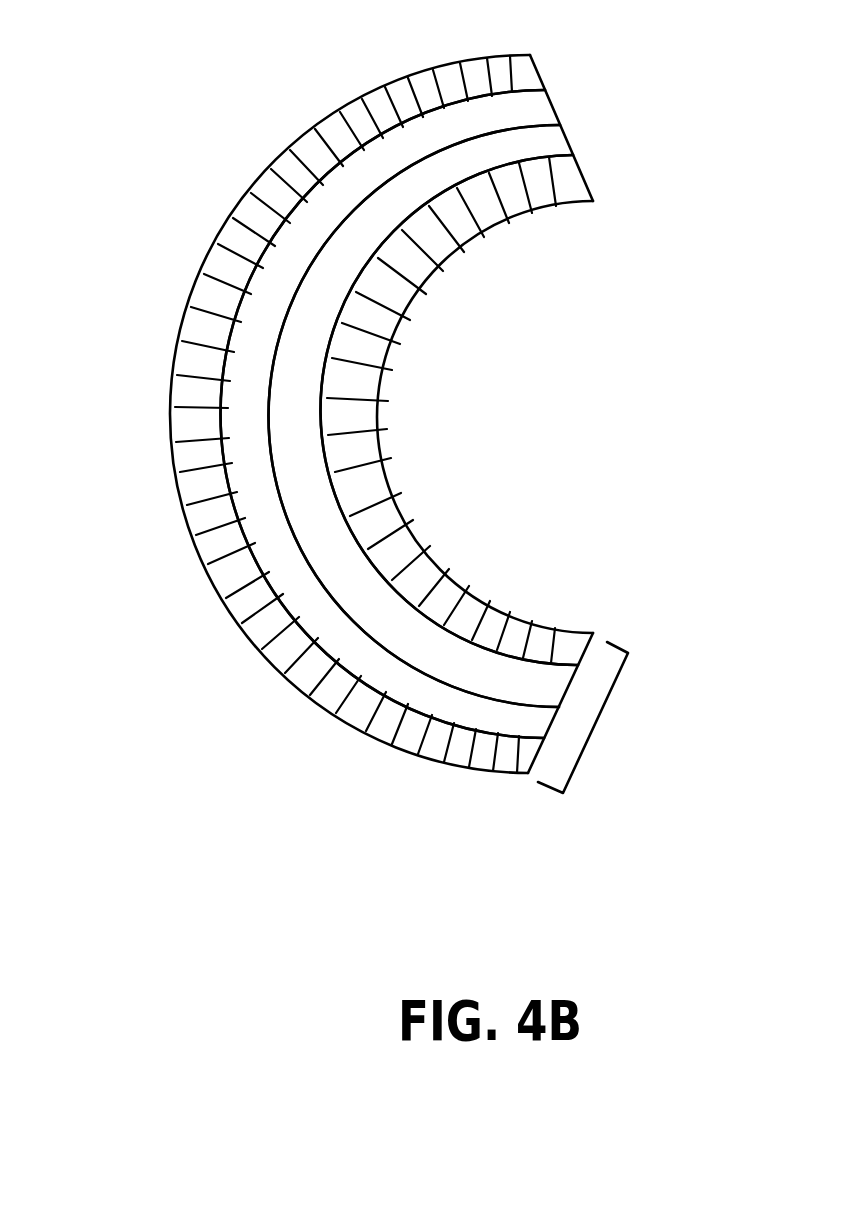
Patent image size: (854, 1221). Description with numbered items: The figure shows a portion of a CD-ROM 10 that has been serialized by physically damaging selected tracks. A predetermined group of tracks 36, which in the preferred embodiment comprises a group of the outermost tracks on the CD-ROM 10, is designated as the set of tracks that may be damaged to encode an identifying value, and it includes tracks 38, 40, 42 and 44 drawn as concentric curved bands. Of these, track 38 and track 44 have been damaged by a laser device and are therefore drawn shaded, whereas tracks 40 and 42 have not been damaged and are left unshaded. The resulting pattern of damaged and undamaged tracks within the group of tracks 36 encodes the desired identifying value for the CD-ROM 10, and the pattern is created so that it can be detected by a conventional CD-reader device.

The CD-ROM 10 is at (375, 424).
The predetermined group of tracks 36 is at (605, 724).
The track 38 is at (522, 68).
The track 40 is at (535, 102).
The track 42 is at (558, 143).
The track 44 is at (573, 175).